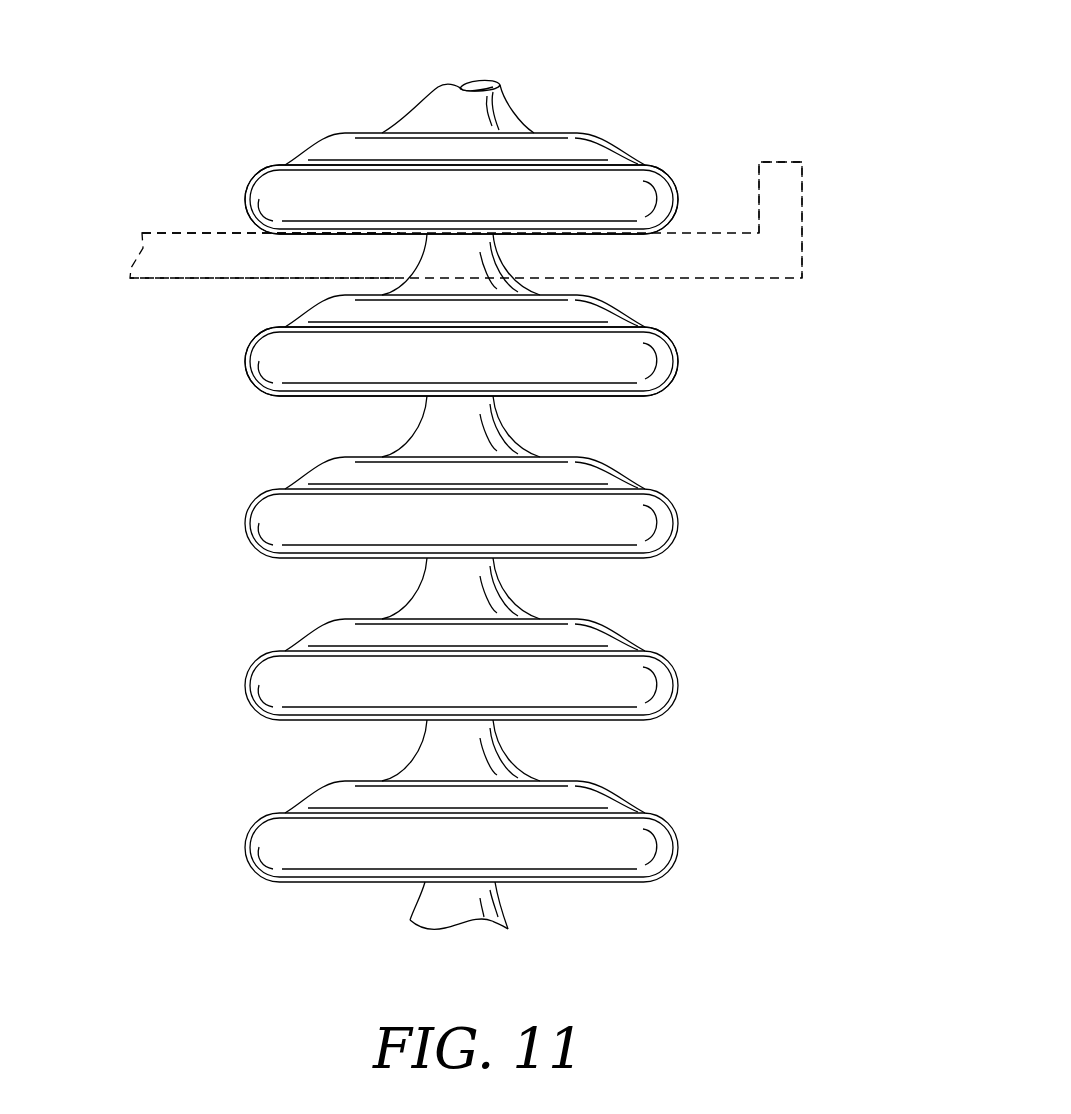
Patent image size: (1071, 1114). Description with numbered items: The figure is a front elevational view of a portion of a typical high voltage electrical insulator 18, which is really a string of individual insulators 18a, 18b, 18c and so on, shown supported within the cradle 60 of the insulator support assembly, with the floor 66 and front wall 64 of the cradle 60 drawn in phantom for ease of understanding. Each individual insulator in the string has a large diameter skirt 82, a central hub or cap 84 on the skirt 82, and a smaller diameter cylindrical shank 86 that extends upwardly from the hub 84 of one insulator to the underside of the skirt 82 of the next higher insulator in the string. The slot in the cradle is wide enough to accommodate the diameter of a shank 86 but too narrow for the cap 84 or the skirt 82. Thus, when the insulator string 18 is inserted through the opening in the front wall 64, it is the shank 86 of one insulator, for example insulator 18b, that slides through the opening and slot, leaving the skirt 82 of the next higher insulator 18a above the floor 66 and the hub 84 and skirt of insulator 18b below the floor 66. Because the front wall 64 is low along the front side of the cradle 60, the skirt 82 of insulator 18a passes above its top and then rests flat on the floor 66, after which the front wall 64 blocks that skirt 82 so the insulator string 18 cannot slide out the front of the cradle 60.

The high voltage electrical insulator 18 is at (730, 531).
The individual insulator 18a is at (297, 142).
The individual insulator 18b is at (267, 323).
The individual insulator 18c is at (258, 487).
The skirt 82 is at (627, 195).
The hub 84 is at (577, 312).
The shank 86 is at (467, 430).
The cradle 60 is at (794, 146).
The front wall 64 is at (793, 207).
The floor 66 is at (176, 233).